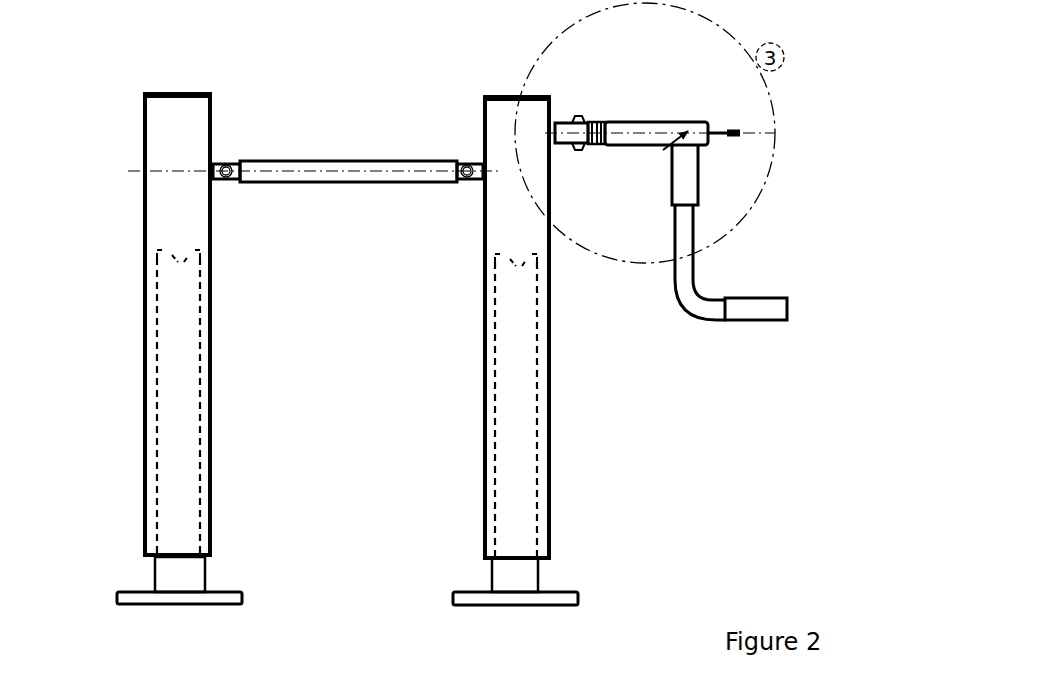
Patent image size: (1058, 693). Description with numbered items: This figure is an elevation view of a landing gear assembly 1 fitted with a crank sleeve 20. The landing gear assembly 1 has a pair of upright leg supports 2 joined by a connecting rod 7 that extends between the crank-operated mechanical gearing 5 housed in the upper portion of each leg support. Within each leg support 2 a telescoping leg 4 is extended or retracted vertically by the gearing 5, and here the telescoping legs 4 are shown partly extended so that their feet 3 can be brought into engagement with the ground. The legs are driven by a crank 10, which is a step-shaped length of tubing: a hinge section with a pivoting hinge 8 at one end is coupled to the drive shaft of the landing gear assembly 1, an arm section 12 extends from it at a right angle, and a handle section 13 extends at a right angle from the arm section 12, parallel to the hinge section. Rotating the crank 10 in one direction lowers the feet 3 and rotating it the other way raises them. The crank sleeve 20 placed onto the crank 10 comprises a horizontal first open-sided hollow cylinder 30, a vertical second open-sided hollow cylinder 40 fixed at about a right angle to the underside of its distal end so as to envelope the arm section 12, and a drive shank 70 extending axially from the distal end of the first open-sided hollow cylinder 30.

The landing gear assembly 1 is at (388, 69).
The leg supports 2 is at (146, 322).
The feet 3 is at (131, 596).
The telescoping legs 4 is at (178, 576).
The crank-operated mechanical gearing 5 is at (178, 166).
The connecting rod 7 is at (270, 160).
The pivoting hinge 8 is at (576, 121).
The crank 10 is at (760, 233).
The arm section 12 is at (684, 241).
The handle section 13 is at (761, 321).
The crank sleeve 20 is at (748, 106).
The first open-sided hollow cylinder 30 is at (627, 122).
The second open-sided hollow cylinder 40 is at (684, 181).
The drive shank 70 is at (732, 138).